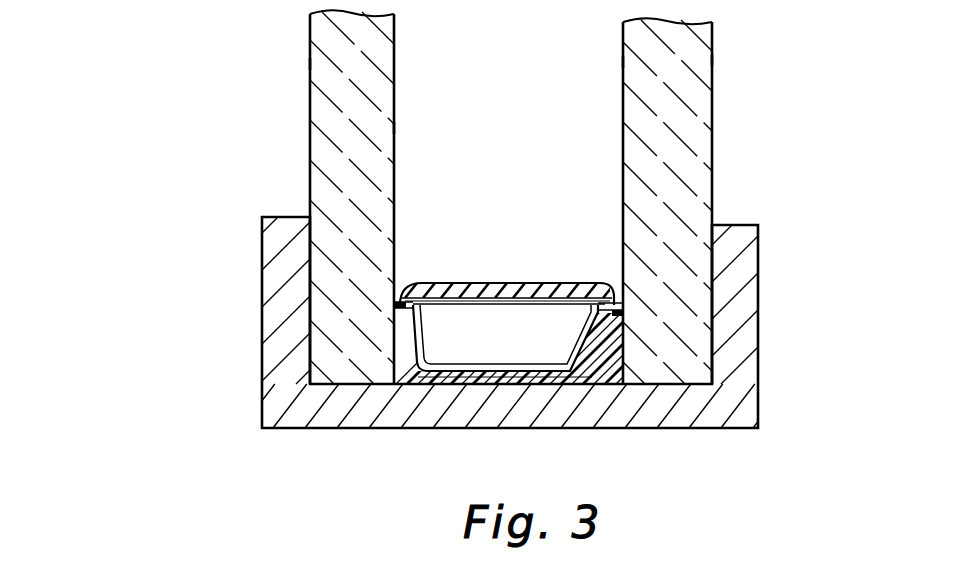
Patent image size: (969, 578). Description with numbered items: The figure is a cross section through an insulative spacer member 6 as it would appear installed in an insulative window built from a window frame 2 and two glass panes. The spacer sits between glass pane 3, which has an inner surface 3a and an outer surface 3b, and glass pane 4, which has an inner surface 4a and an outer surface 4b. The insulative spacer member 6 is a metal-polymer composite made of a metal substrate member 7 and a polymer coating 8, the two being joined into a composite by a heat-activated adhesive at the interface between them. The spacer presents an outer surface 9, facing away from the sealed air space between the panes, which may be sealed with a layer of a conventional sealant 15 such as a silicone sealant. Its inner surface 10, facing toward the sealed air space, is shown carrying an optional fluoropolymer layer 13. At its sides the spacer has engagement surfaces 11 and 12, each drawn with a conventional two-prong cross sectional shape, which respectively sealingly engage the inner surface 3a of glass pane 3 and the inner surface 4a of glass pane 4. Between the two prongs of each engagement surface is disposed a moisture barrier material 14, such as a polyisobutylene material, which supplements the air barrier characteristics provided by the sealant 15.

The window frame 2 is at (737, 431).
The glass pane 3 is at (693, 100).
The inner surface 3a is at (623, 62).
The outer surface 3b is at (712, 60).
The glass pane 4 is at (326, 100).
The inner surface 4a is at (394, 128).
The outer surface 4b is at (310, 62).
The insulative spacer member 6 is at (506, 319).
The metal substrate member 7 is at (462, 282).
The polymer coating 8 is at (577, 283).
The outer surface 9 is at (487, 372).
The inner surface 10 is at (503, 282).
The engagement surface 11 is at (620, 305).
The engagement surface 12 is at (393, 318).
The fluoropolymer layer 13 is at (545, 283).
The moisture barrier material 14 is at (392, 302).
The sealant 15 is at (603, 375).